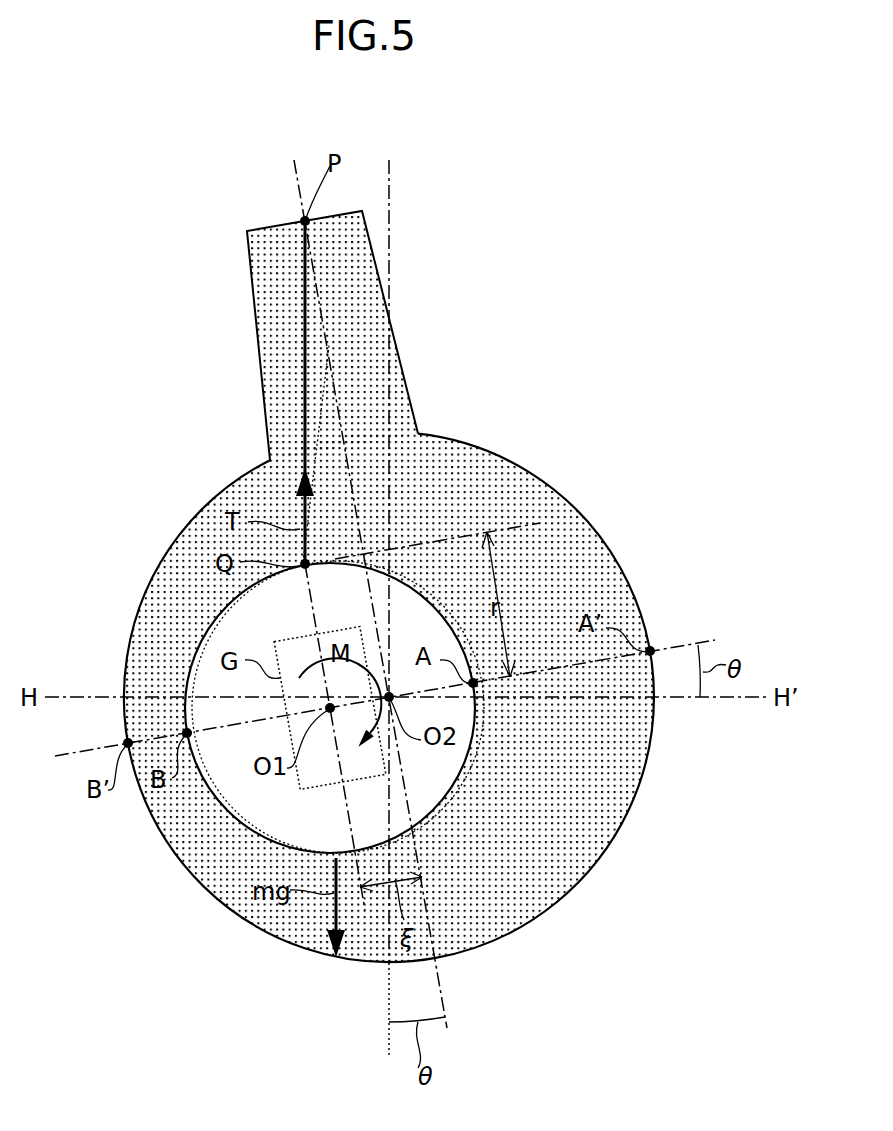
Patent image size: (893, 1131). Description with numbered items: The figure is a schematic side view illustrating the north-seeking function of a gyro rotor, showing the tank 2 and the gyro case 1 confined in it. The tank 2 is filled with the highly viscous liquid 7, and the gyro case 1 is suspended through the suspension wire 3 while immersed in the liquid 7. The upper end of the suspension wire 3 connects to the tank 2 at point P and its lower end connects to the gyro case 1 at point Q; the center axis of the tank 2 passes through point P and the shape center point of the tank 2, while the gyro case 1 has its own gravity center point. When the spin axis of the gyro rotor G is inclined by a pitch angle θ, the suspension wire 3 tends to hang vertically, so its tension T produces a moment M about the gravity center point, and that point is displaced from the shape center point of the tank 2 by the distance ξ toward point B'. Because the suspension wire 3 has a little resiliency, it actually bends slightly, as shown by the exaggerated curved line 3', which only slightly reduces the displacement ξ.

The gyro case 1 is at (246, 826).
The tank 2 is at (199, 882).
The suspension wire 3 is at (319, 335).
The exaggerated curved line 3' is at (262, 453).
The highly viscous liquid 7 is at (389, 586).